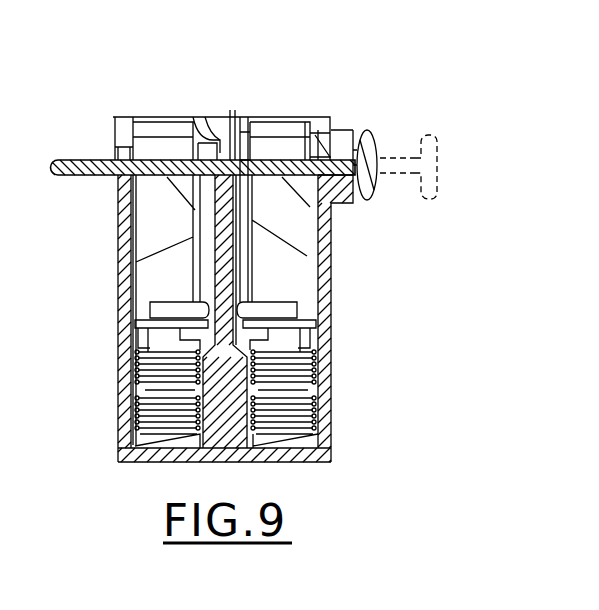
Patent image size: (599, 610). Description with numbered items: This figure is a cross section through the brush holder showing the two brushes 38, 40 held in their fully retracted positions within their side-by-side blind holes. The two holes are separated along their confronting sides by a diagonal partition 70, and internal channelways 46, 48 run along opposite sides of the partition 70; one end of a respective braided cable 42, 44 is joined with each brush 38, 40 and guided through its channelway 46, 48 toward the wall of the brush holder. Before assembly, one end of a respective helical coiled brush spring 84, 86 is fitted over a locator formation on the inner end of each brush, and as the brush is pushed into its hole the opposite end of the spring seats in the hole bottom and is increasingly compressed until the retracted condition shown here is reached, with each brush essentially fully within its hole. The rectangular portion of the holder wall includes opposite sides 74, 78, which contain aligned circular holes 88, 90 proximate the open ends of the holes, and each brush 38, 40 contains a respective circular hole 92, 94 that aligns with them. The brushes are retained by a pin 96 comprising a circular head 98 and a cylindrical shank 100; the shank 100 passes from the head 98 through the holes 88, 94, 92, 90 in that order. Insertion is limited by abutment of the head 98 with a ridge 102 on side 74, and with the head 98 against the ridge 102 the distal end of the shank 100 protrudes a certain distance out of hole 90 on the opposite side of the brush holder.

The brush 38 is at (147, 217).
The brush 40 is at (303, 257).
The braided cable 42 is at (150, 309).
The braided cable 44 is at (318, 296).
The internal channelway 46 is at (147, 328).
The internal channelway 48 is at (312, 323).
The diagonal partition 70 is at (215, 233).
The side 74 is at (330, 234).
The side 78 is at (120, 202).
The helical coiled brush spring 84 is at (150, 408).
The helical coiled brush spring 86 is at (318, 375).
The circular hole 88 is at (320, 153).
The circular hole 90 is at (118, 148).
The circular hole 92 is at (153, 158).
The circular hole 94 is at (272, 157).
The pin 96 is at (365, 135).
The circular head 98 is at (376, 156).
The cylindrical shank 100 is at (53, 162).
The ridge 102 is at (357, 157).